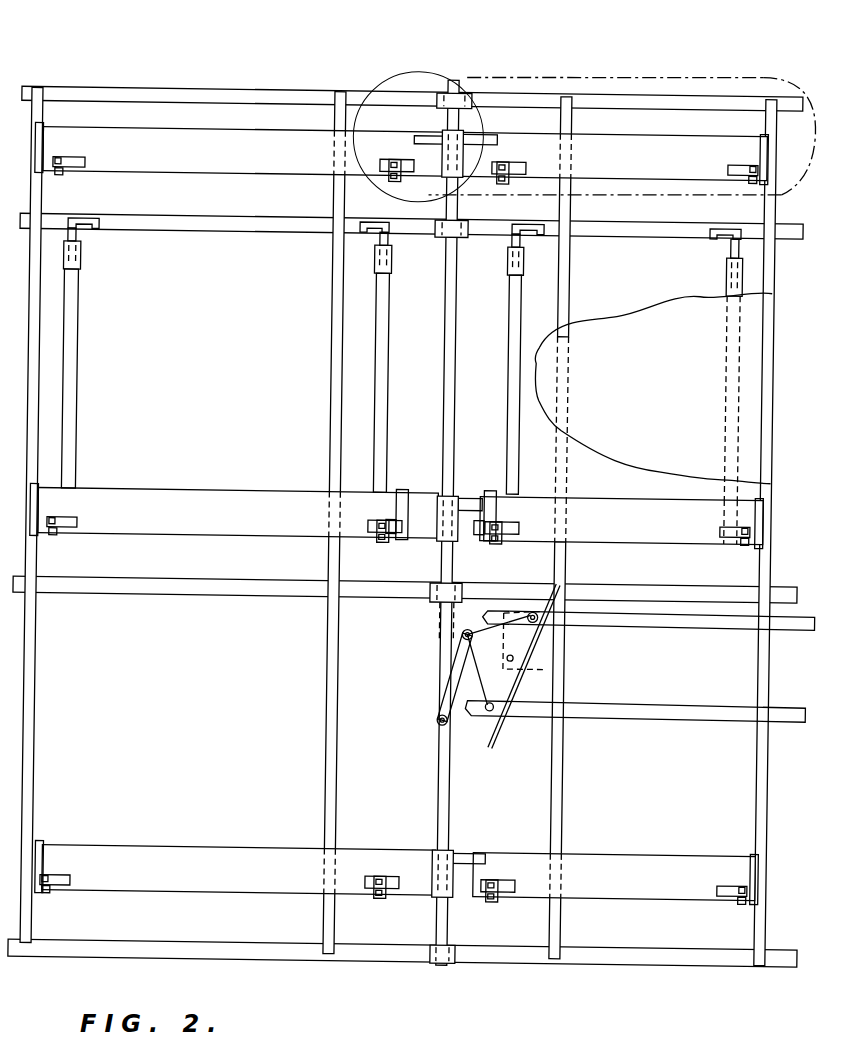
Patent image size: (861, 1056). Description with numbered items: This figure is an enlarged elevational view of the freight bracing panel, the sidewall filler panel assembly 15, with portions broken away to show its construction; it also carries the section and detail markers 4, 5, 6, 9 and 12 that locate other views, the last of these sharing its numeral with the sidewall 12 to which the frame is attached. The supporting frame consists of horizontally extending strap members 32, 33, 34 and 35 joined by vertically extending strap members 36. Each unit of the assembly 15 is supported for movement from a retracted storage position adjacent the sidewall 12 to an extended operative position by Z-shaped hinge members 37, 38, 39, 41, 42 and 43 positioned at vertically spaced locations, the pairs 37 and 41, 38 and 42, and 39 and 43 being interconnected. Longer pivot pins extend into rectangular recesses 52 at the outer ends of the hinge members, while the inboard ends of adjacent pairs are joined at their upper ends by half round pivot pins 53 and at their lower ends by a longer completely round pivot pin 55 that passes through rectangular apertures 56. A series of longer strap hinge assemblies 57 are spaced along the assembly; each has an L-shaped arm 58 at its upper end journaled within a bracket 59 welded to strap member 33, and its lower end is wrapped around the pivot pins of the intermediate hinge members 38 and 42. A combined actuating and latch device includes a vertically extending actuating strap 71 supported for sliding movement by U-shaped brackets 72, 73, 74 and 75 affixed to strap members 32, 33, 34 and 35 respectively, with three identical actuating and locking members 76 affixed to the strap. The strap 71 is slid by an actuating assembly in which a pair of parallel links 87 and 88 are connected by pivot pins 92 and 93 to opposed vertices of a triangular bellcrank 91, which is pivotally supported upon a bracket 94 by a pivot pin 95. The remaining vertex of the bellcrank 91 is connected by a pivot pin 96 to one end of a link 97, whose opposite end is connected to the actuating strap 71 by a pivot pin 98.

The section line 4- 4 is at (781, 89).
The section line 5- 5 is at (516, 124).
The section line 6- 6 is at (761, 206).
The detail circle 9 is at (457, 83).
The sidewall 12 is at (540, 606).
The sidewall filler panel assembly 15 is at (500, 58).
The horizontally extending strap member 32 is at (90, 90).
The horizontally extending strap member 33 is at (66, 219).
The horizontally extending strap member 34 is at (103, 582).
The horizontally extending strap member 35 is at (97, 945).
The vertically extending strap members 36 is at (40, 676).
The hinge member 37 is at (180, 162).
The hinge member 38 is at (190, 493).
The hinge member 39 is at (145, 850).
The hinge member 41 is at (624, 158).
The hinge member 42 is at (584, 506).
The hinge member 43 is at (608, 856).
The rectangular recesses 52 is at (724, 167).
The half round pivot pins 53 is at (426, 140).
The pivot pin 55 is at (398, 182).
The rectangular apertures 56 is at (404, 491).
The strap hinge assemblies 57 is at (84, 352).
The L-shaped arm 58 is at (78, 251).
The bracket 59 is at (96, 222).
The actuating strap 71 is at (440, 650).
The U-shaped bracket 72 is at (476, 100).
The U-shaped bracket 73 is at (460, 240).
The U-shaped bracket 74 is at (465, 585).
The U-shaped bracket 75 is at (462, 966).
The actuating and locking members 76 is at (478, 152).
The parallel link 87 is at (660, 628).
The parallel link 88 is at (660, 712).
The bellcrank 91 is at (515, 656).
The pivot pin 92 is at (548, 600).
The pivot pin 93 is at (494, 716).
The bracket 94 is at (546, 666).
The pivot pin 95 is at (540, 670).
The pivot pin 96 is at (462, 631).
The link 97 is at (456, 680).
The pivot pin 98 is at (440, 724).